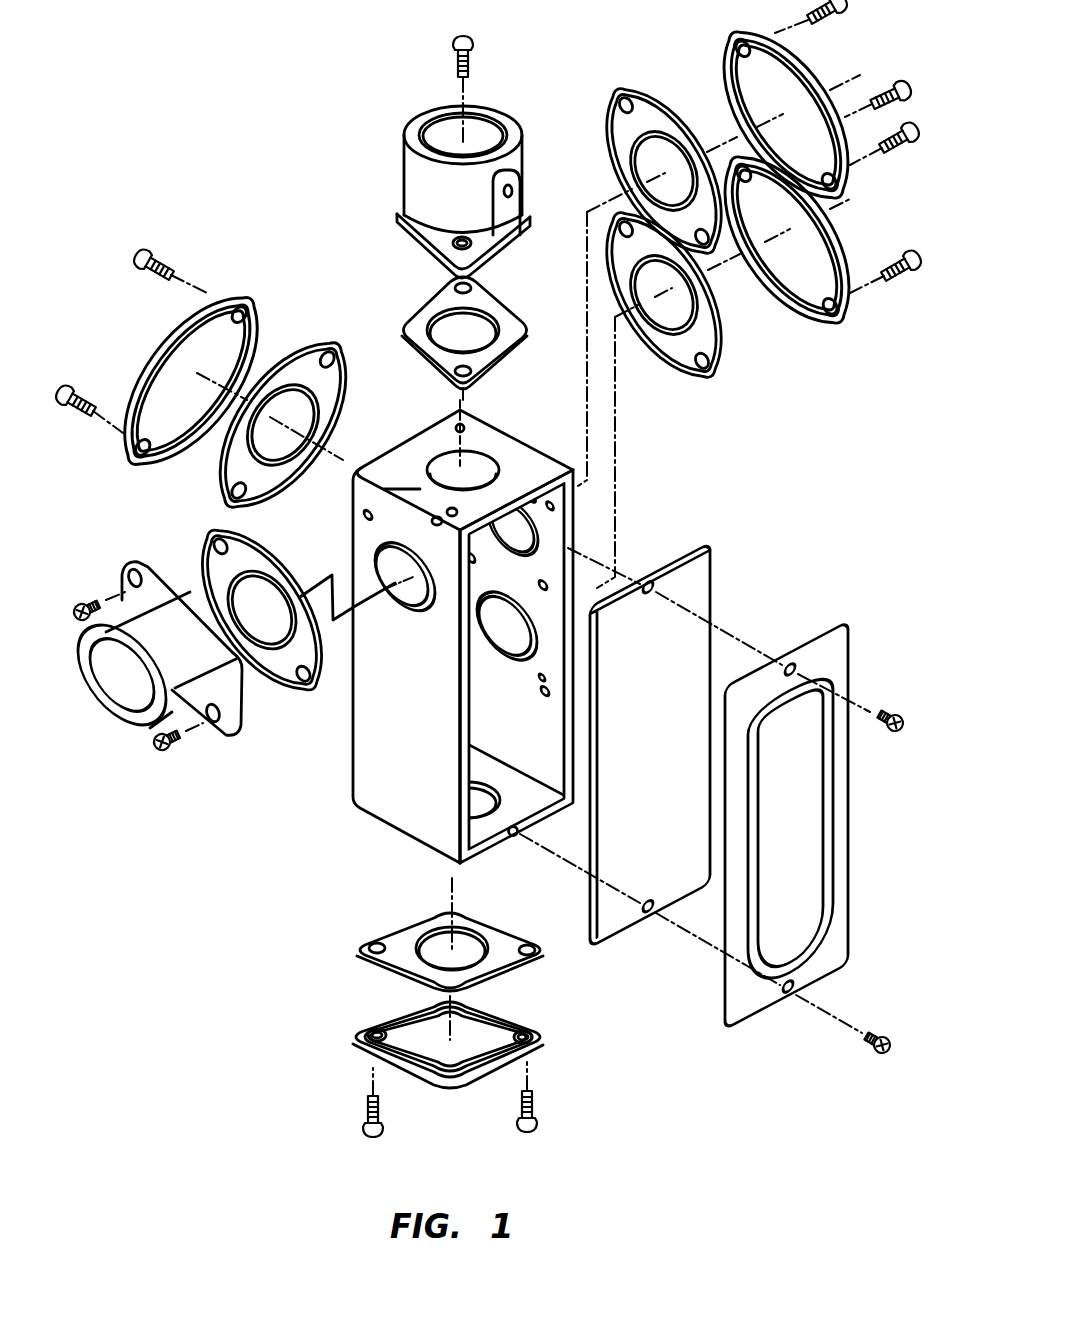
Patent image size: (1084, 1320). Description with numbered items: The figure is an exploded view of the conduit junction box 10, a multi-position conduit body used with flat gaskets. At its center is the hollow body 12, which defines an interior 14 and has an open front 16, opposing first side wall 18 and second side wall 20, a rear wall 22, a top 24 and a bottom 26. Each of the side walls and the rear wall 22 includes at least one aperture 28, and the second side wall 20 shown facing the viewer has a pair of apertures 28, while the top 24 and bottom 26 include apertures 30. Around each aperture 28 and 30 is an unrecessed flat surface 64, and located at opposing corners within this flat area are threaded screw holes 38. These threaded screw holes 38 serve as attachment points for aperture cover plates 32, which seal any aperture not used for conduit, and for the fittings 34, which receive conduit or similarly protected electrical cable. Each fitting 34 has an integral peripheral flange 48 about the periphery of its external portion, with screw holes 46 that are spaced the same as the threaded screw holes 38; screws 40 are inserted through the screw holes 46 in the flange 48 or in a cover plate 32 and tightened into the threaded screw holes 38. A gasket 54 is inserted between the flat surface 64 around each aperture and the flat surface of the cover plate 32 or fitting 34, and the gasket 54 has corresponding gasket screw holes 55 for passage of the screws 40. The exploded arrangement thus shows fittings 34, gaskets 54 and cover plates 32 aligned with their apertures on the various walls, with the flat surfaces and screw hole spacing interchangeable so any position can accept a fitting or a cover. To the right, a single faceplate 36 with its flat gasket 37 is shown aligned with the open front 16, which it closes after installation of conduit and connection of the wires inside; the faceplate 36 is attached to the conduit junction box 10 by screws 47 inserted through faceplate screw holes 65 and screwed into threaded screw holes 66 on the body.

The conduit junction box 10 is at (718, 498).
The hollow body 12 is at (406, 786).
The interior 14 is at (460, 778).
The open front 16 is at (468, 663).
The first side wall 18 is at (353, 708).
The second side wall 20 is at (567, 552).
The rear wall 22 is at (380, 448).
The top 24 is at (402, 471).
The bottom 26 is at (499, 785).
The aperture 28 is at (537, 591).
The aperture 30 is at (473, 447).
The aperture cover plate 32 is at (232, 298).
The fitting 34 is at (520, 150).
The faceplate 36 is at (850, 652).
The flat gasket 37 is at (610, 940).
The threaded screw hole 38 is at (362, 517).
The screw 40 is at (471, 46).
The screw hole 46 is at (120, 580).
The screw 47 is at (882, 1054).
The integral peripheral flange 48 is at (165, 566).
The gasket 54 is at (303, 350).
The gasket screw hole 55 is at (532, 951).
The flat surface 64 is at (497, 450).
The faceplate screw hole 65 is at (788, 1000).
The threaded screw hole 66 is at (513, 836).